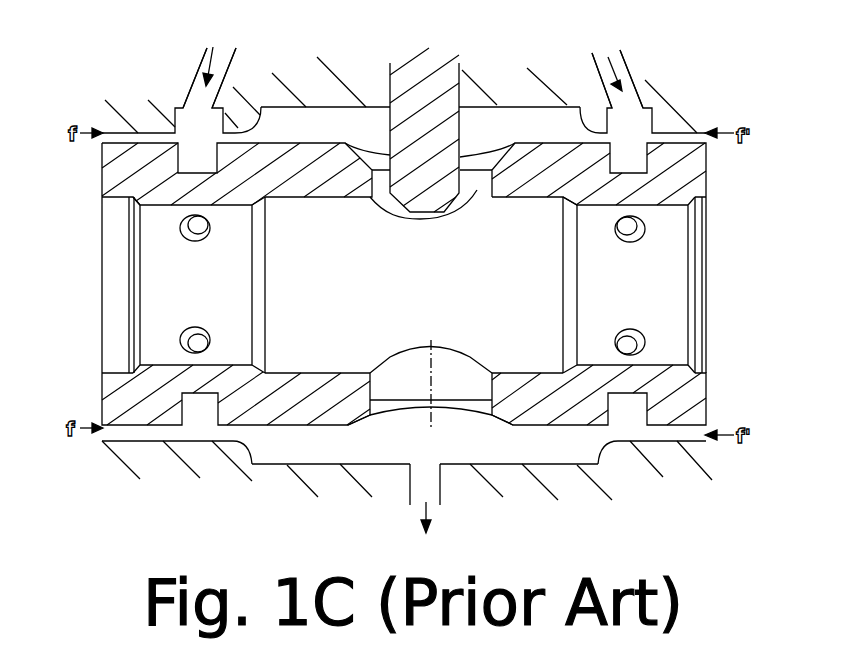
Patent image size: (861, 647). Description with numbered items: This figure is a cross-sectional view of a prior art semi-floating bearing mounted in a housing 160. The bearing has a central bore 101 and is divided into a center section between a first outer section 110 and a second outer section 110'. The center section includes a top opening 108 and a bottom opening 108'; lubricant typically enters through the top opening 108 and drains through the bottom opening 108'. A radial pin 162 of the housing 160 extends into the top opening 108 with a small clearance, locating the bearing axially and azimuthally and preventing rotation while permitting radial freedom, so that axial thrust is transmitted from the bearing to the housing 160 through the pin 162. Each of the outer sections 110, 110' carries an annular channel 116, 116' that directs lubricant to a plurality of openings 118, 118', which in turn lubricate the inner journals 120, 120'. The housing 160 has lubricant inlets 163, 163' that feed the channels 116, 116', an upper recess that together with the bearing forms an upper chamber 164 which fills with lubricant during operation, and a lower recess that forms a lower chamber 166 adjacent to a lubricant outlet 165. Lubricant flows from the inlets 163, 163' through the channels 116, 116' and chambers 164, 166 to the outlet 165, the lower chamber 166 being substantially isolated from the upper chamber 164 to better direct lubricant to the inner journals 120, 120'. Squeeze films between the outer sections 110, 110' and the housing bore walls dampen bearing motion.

The central bore 101 is at (353, 338).
The top opening 108 is at (451, 189).
The bottom opening 108' is at (451, 381).
The first outer section 110 is at (237, 284).
The second outer section 110' is at (599, 284).
The annular channel 116 is at (106, 295).
The annular channel 116' is at (714, 284).
The openings 118 is at (279, 284).
The openings 118' is at (552, 285).
The inner journal 120 is at (199, 285).
The inner journal 120' is at (629, 285).
The housing 160 is at (718, 60).
The radial pin 162 is at (420, 213).
The lubricant inlet 163 is at (229, 64).
The lubricant inlet 163' is at (603, 64).
The upper chamber 164 is at (353, 131).
The lubricant outlet 165 is at (471, 559).
The lower chamber 166 is at (419, 454).